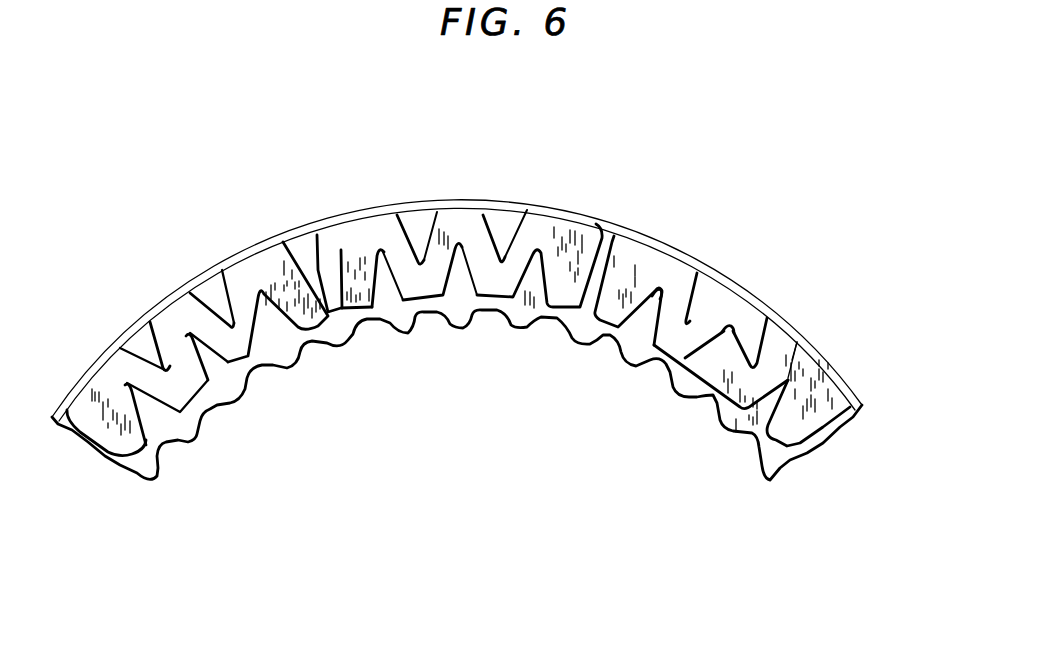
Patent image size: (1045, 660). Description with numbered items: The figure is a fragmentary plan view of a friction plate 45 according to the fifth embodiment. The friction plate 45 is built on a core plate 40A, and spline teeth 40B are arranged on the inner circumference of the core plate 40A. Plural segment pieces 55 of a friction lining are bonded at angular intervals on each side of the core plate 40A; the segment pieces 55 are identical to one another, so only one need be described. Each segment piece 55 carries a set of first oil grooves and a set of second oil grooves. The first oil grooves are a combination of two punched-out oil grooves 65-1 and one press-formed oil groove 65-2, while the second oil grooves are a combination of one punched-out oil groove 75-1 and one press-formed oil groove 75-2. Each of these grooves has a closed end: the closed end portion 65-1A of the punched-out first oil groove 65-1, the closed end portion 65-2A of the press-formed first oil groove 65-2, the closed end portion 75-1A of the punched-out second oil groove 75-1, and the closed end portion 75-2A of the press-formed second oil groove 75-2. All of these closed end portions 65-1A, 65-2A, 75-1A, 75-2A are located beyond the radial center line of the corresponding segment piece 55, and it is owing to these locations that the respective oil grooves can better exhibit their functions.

The friction plate 45 is at (567, 182).
The core plate 40A is at (827, 365).
The spline teeth 40B is at (727, 428).
The segment piece 55 is at (808, 420).
The punched-out oil groove 65-1 is at (640, 320).
The closed end portion 65-1A is at (658, 288).
The press-formed oil groove 65-2 is at (718, 388).
The closed end portion 65-2A is at (688, 323).
The punched-out oil groove 75-1 is at (770, 338).
The closed end portion 75-1A is at (730, 402).
The press-formed oil groove 75-2 is at (688, 318).
The closed end portion 75-2A is at (662, 366).